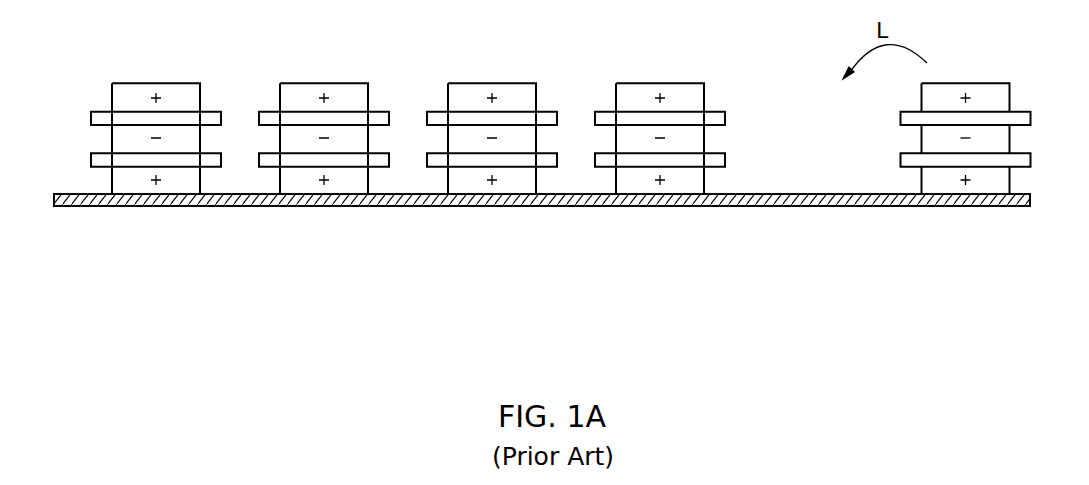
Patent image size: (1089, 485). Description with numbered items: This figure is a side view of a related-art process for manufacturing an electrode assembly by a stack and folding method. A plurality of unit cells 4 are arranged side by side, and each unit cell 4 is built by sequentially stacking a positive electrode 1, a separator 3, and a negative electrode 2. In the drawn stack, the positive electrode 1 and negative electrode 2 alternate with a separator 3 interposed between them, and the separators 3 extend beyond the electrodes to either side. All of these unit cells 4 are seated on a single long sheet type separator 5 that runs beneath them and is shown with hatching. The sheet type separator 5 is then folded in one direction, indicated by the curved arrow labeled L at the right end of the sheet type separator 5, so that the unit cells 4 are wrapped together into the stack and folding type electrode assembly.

The positive electrode 1 is at (1005, 98).
The negative electrode 2 is at (1005, 138).
The separator 3 is at (1030, 118).
The unit cell 4 is at (962, 128).
The sheet type separator 5 is at (1005, 203).